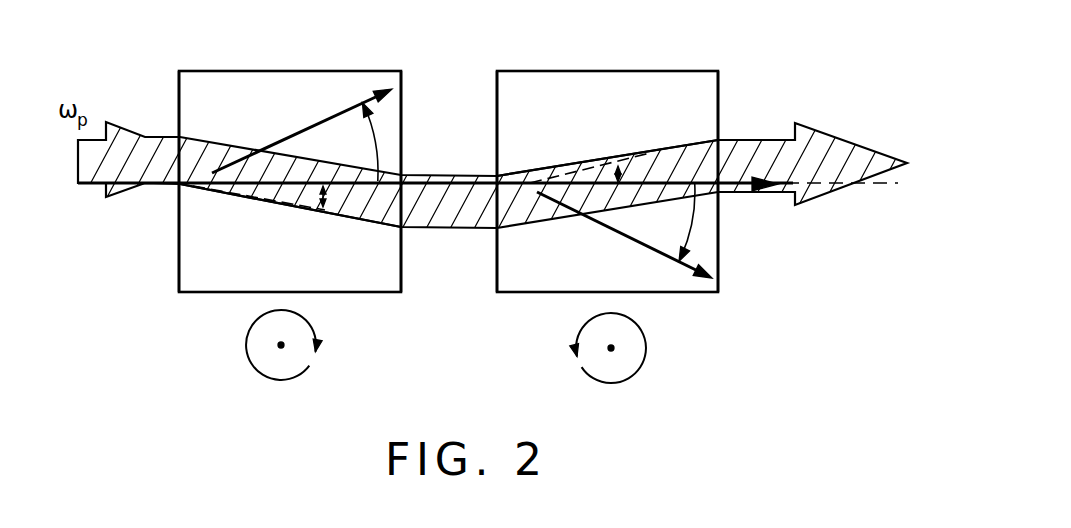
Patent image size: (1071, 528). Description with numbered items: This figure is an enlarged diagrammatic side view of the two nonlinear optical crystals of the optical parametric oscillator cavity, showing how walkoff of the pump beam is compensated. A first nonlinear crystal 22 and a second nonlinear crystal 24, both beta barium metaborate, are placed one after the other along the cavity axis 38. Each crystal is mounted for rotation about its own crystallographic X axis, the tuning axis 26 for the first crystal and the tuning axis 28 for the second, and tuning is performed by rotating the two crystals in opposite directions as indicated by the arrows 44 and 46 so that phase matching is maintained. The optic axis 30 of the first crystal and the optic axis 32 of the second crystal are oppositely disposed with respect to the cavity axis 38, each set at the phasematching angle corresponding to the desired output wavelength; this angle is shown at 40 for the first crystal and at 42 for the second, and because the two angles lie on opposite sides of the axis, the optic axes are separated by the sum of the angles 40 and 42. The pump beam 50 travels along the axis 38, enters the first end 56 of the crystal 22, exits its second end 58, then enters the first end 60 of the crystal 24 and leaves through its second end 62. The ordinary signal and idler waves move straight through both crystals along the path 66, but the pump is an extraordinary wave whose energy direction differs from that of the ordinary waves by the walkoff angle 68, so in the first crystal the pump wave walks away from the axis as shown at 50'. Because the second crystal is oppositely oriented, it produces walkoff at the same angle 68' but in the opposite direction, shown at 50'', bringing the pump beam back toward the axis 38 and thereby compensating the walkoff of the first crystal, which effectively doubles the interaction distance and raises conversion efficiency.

The first nonlinear optical crystal 22 is at (353, 70).
The second nonlinear optical crystal 24 is at (593, 70).
The crystallographic X axis of first crystal 26 is at (281, 350).
The crystallographic X axis of second crystal 28 is at (612, 350).
The optic axis of first crystal 30 is at (290, 133).
The optic axis of second crystal 32 is at (618, 233).
The cavity axis 38 is at (862, 187).
The phasematching angle of first crystal 40 is at (382, 148).
The phasematching angle of second crystal 42 is at (690, 228).
The rotation arrow for first crystal 44 is at (313, 326).
The rotation arrow for second crystal 46 is at (614, 386).
The pump beam 50 is at (503, 171).
The walked-off pump wave in first crystal 50' is at (290, 233).
The walked-off pump wave in second crystal 50'' is at (607, 133).
The first end of first crystal 56 is at (179, 85).
The second end of first crystal 58 is at (405, 268).
The first end of second crystal 60 is at (497, 82).
The second end of second crystal 62 is at (720, 83).
The signal and idler beam path 66 is at (740, 193).
The walkoff angle in first crystal 68 is at (266, 220).
The walkoff angle in second crystal 68' is at (590, 147).